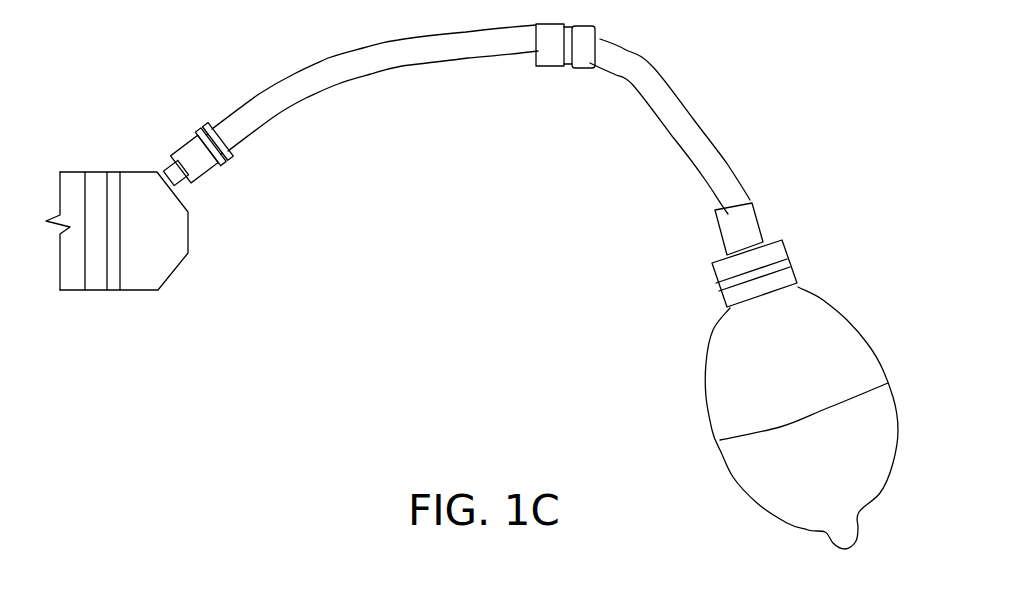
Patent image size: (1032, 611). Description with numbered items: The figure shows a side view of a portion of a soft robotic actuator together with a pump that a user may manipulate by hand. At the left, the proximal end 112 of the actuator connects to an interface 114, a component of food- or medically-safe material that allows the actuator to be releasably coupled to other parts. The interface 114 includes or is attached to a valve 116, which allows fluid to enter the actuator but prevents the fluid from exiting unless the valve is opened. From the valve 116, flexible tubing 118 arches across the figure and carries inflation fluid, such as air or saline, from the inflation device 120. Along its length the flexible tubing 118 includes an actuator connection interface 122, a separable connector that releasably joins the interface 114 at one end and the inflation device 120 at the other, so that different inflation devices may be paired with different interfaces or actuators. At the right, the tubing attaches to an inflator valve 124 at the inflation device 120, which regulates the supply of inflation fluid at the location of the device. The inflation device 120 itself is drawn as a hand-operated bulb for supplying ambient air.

The proximal end 112 is at (65, 150).
The interface 114 is at (143, 273).
The valve 116 is at (197, 180).
The flexible tubing 118 is at (240, 109).
The inflation device 120 is at (717, 405).
The actuator connection interface 122 is at (577, 68).
The inflator valve 124 is at (777, 250).